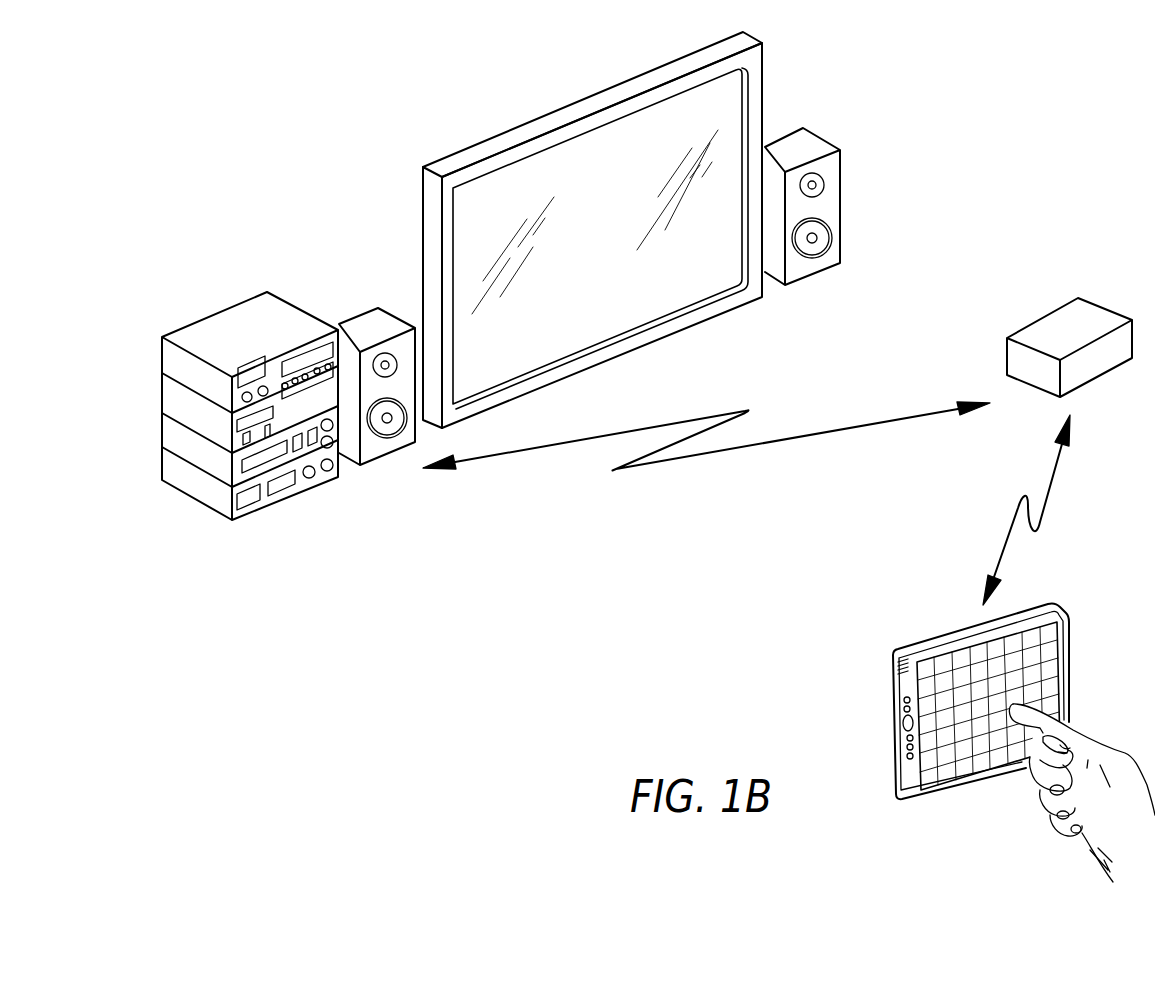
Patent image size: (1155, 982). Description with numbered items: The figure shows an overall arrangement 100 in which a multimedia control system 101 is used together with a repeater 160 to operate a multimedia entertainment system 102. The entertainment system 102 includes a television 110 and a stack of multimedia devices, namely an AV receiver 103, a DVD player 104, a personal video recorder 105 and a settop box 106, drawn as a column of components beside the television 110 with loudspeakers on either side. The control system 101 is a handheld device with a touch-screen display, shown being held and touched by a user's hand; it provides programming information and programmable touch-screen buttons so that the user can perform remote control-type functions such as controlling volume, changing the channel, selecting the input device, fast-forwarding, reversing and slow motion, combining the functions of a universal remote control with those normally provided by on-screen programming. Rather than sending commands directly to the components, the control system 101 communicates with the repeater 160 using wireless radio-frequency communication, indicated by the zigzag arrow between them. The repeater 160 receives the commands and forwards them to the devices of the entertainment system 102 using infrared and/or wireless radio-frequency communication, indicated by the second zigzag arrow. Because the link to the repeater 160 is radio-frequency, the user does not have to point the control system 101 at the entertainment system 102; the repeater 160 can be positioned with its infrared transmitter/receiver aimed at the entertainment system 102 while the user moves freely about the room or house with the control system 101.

The home entertainment system 100 is at (399, 659).
The multimedia control system 101 is at (1013, 620).
The multimedia entertainment system 102 is at (207, 248).
The AV receiver 103 is at (178, 363).
The DVD player 104 is at (173, 402).
The personal video recorder 105 is at (180, 440).
The settop box 106 is at (182, 475).
The television 110 is at (575, 110).
The repeater 160 is at (1075, 313).